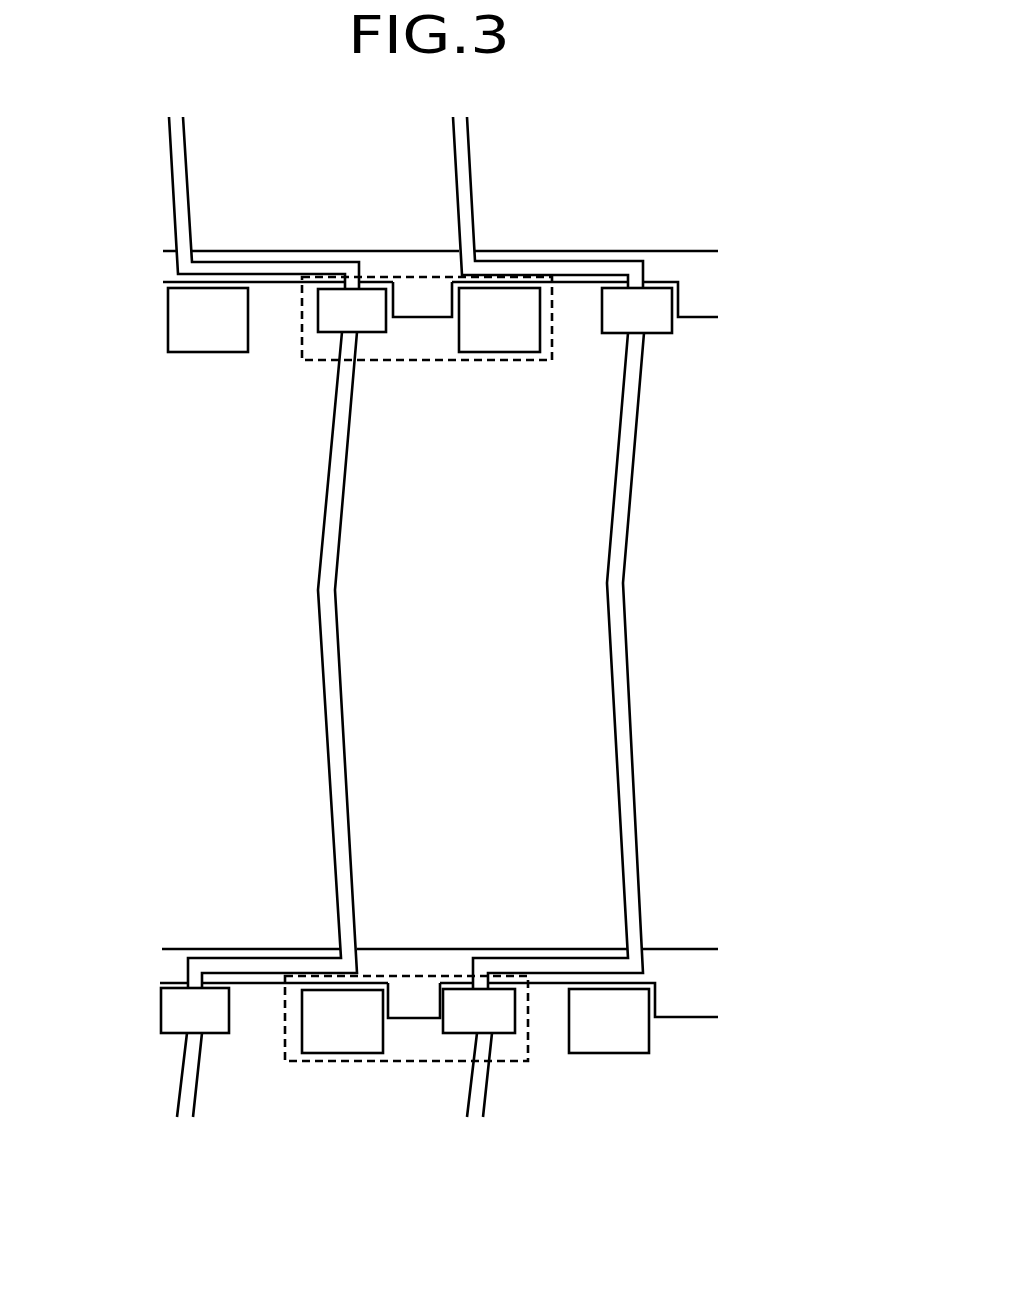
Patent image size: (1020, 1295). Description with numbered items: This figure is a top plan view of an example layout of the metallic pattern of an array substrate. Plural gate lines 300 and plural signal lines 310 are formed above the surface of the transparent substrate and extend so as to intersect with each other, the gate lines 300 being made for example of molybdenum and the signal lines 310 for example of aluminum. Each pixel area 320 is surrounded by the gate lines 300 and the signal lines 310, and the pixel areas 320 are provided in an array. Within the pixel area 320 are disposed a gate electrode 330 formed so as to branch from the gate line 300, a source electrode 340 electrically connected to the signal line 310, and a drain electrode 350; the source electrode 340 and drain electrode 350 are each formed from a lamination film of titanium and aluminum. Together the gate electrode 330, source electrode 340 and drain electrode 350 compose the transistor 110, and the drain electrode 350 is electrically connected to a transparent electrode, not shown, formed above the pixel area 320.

The transistor 110 is at (417, 362).
The gate line 300 is at (697, 283).
The signal line 310 is at (190, 200).
The pixel area 320 is at (235, 607).
The gate electrode 330 is at (425, 300).
The source electrode 340 is at (352, 309).
The drain electrode 350 is at (208, 320).